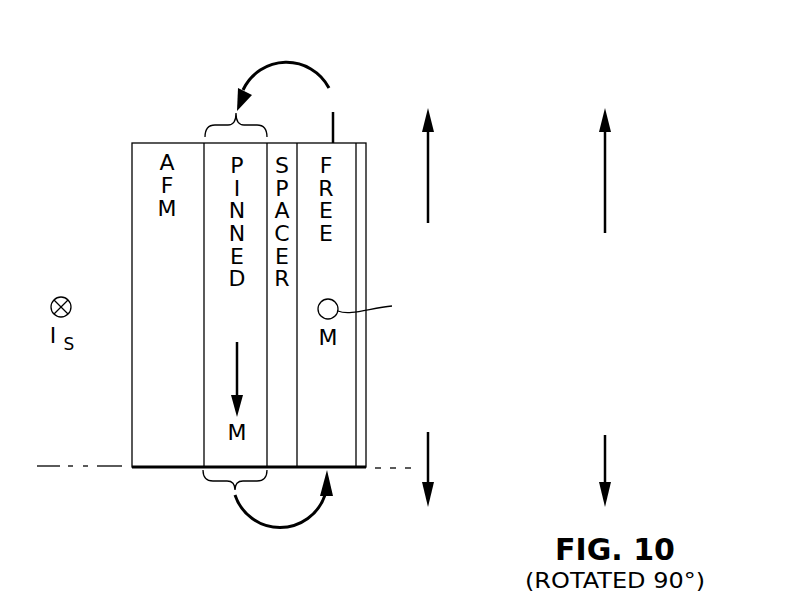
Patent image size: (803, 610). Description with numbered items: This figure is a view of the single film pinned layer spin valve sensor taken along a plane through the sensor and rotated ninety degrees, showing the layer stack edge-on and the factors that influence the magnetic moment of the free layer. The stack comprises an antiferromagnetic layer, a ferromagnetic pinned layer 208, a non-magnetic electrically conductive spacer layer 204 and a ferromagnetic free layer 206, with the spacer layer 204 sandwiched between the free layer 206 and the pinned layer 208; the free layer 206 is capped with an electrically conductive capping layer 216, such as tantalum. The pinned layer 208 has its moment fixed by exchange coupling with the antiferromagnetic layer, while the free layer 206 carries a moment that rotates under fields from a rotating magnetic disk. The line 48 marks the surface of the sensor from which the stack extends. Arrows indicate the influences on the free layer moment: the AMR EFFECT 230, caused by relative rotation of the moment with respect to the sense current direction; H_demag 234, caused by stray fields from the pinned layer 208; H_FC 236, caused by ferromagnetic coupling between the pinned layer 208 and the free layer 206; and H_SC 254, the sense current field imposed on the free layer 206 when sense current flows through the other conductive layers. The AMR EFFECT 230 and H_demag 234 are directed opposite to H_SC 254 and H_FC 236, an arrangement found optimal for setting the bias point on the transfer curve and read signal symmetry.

The air bearing surface (ABS) 48 is at (45, 464).
The spacer layer 204 is at (290, 408).
The free layer 206 is at (338, 460).
The pinned layer 208 is at (224, 451).
The capping layer 216 is at (365, 360).
The AMR EFFECT 230 is at (428, 158).
The H_demag 234 is at (250, 75).
The H_SC 254 is at (428, 462).
The H_FC 236 is at (605, 462).